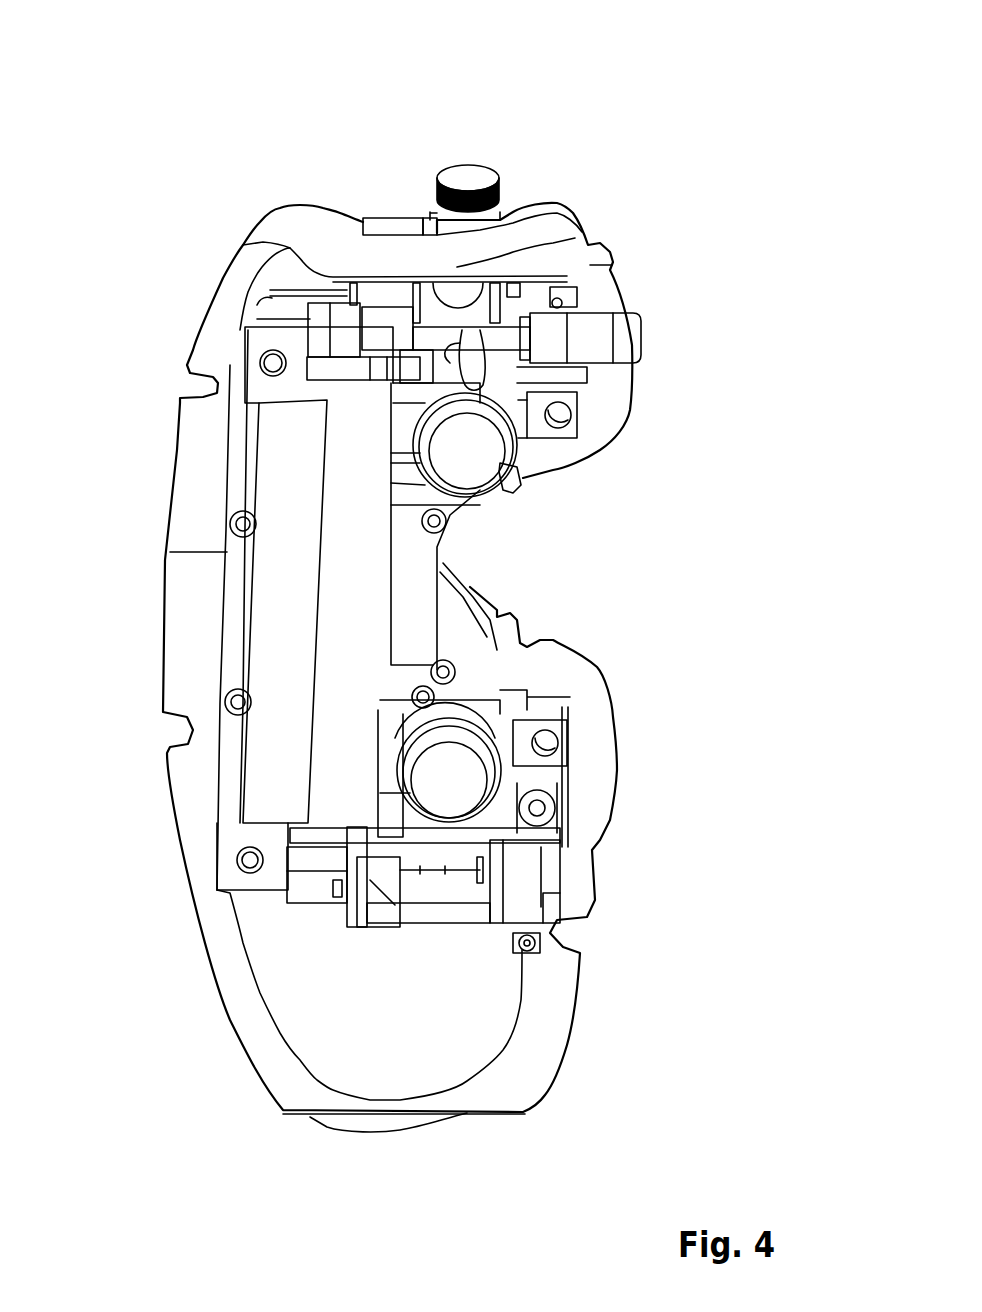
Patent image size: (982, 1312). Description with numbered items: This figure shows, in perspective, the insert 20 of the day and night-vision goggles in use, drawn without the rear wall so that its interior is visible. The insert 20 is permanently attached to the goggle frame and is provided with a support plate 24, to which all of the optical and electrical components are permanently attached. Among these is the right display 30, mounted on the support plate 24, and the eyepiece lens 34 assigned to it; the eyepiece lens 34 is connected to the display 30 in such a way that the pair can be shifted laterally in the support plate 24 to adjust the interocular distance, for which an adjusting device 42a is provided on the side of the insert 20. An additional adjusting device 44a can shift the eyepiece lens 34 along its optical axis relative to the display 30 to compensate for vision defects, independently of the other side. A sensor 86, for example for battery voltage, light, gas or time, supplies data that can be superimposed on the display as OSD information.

The insert 20 is at (223, 1003).
The support plate 24 is at (235, 657).
The display 30 is at (578, 403).
The eyepiece lens 34 is at (490, 462).
The adjusting device 42a is at (497, 175).
The additional adjusting device 44a is at (632, 340).
The sensor 86 is at (467, 710).